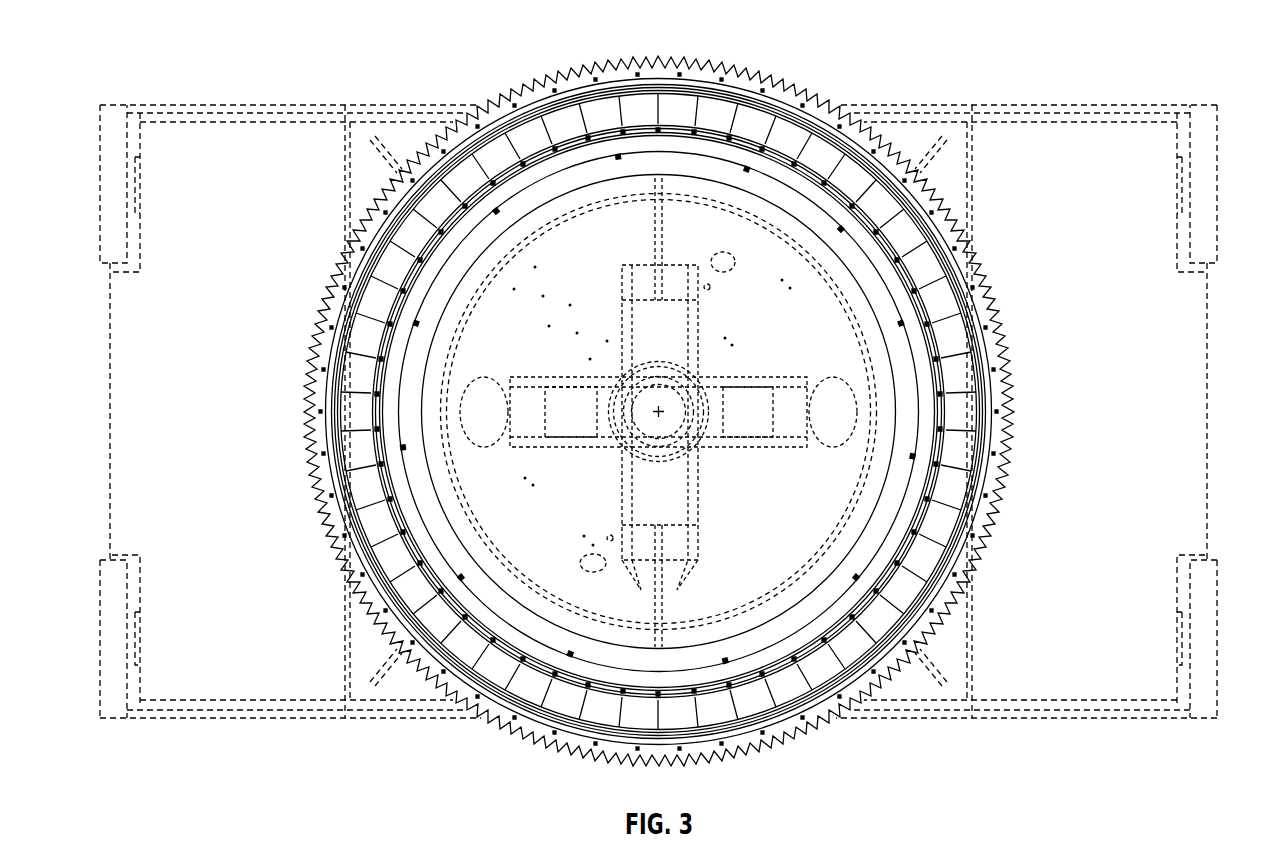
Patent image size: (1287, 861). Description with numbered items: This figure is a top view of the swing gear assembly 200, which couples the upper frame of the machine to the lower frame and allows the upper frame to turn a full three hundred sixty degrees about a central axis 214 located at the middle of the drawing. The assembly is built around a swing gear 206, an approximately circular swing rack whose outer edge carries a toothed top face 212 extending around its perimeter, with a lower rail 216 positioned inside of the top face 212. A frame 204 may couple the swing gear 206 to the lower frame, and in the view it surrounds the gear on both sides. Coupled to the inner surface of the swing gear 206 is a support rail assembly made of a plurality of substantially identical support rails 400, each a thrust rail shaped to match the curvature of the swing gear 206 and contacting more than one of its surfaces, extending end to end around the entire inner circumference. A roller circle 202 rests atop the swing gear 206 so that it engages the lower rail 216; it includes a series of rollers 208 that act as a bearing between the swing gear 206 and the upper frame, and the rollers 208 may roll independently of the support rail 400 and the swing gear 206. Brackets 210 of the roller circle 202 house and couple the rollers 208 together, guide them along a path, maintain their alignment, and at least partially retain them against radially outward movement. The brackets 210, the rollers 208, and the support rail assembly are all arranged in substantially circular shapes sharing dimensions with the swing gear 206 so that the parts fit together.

The swing gear assembly 200 is at (688, 415).
The roller circle 202 is at (563, 698).
The frame 204 is at (1197, 348).
The swing gear 206 is at (788, 143).
The rollers 208 is at (822, 110).
The brackets 210 is at (890, 635).
The top face 212 is at (682, 72).
The central axis 214 is at (661, 410).
The lower rail 216 is at (943, 405).
The support rail 400 is at (492, 717).